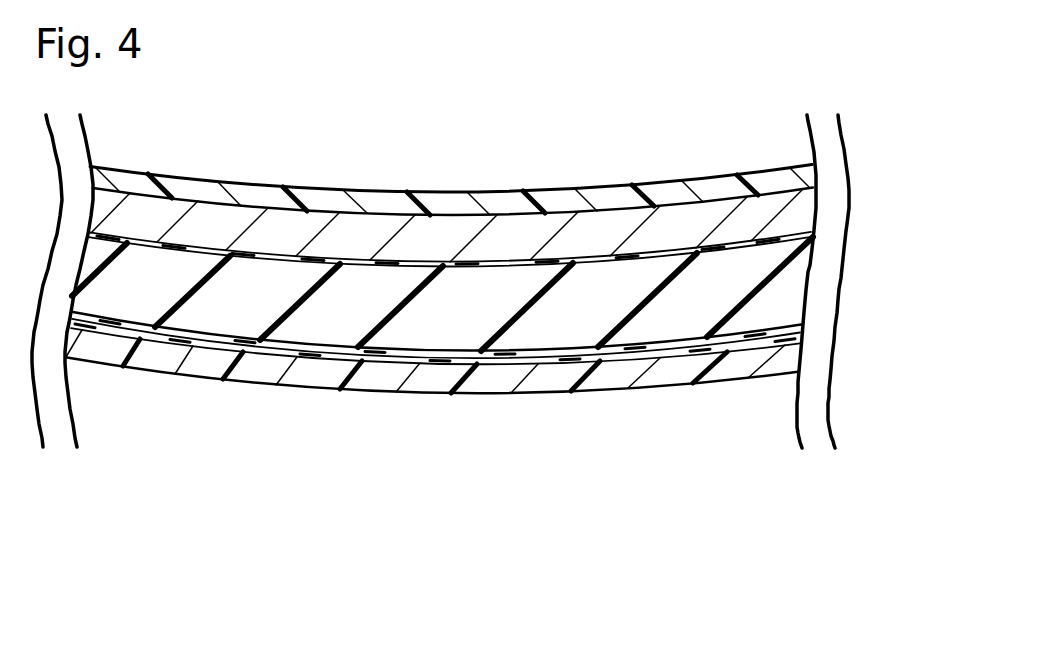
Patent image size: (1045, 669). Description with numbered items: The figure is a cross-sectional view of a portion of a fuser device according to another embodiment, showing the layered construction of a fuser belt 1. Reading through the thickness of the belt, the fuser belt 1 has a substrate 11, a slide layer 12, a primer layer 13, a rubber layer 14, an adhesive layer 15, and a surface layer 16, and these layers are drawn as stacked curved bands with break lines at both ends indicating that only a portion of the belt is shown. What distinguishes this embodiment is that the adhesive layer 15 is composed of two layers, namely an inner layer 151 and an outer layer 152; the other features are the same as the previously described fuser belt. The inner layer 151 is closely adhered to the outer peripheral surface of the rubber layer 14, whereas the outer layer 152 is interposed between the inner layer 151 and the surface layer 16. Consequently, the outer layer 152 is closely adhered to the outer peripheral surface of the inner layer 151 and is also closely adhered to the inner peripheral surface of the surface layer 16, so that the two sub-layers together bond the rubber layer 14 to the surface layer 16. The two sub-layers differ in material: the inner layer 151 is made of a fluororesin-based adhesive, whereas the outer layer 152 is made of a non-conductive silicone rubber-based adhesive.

The fuser belt 1 is at (491, 325).
The substrate 11 is at (812, 197).
The slide layer 12 is at (813, 173).
The primer layer 13 is at (815, 237).
The rubber layer 14 is at (795, 295).
The adhesive layer 15 is at (511, 348).
The inner layer 151 is at (795, 325).
The outer layer 152 is at (777, 343).
The surface layer 16 is at (745, 355).